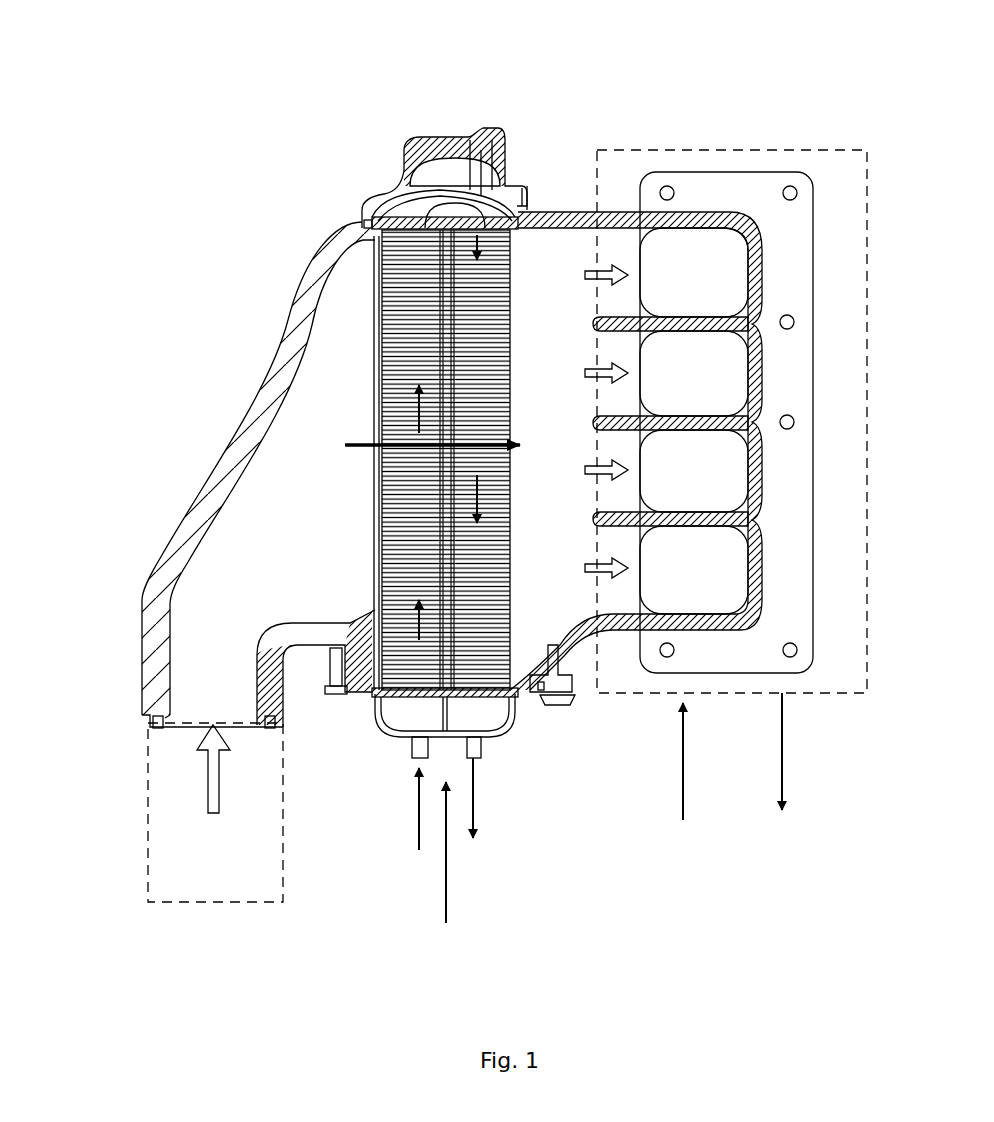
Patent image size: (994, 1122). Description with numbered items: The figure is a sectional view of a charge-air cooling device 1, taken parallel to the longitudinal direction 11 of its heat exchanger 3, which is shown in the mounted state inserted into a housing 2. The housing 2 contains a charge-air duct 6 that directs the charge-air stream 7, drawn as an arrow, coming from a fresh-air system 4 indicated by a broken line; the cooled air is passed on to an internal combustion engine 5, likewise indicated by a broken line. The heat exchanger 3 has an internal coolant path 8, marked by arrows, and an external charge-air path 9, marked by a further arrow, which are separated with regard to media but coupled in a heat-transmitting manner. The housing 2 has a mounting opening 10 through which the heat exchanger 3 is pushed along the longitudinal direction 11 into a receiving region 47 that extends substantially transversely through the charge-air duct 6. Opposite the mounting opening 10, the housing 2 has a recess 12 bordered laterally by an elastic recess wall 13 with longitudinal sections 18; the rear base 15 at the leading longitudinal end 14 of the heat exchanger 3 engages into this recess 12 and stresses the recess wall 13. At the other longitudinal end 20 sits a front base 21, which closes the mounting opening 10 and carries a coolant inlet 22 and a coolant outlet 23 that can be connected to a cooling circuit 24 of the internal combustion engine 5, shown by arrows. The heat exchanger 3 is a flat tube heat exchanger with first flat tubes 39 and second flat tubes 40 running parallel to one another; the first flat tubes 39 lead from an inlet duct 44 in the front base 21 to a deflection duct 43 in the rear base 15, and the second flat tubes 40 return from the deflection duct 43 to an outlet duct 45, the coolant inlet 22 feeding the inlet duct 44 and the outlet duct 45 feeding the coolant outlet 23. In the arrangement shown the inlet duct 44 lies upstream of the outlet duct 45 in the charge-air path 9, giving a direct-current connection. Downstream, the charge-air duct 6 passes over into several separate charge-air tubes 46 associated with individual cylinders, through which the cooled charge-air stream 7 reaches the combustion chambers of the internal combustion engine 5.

The charge-air cooling device 1 is at (216, 142).
The housing 2 is at (283, 318).
The heat exchanger 3 is at (378, 305).
The fresh-air system 4 is at (148, 805).
The internal combustion engine 5 is at (733, 150).
The charge-air duct 6 is at (240, 606).
The charge-air stream 7 is at (590, 278).
The internal coolant path 8 is at (482, 246).
The external charge-air path 9 is at (355, 445).
The mounting opening 10 is at (550, 700).
The longitudinal direction 11 is at (447, 888).
The recess 12 is at (493, 150).
The recess wall 13 is at (358, 210).
The leading longitudinal end 14 is at (376, 204).
The rear base 15 is at (384, 208).
The longitudinal sections 18 is at (528, 186).
The other longitudinal end 20 is at (490, 715).
The front base 21 is at (378, 700).
The coolant inlet 22 is at (412, 755).
The coolant outlet 23 is at (481, 755).
The cooling circuit 24 is at (683, 758).
The first flat tubes 39 is at (402, 215).
The second flat tubes 40 is at (457, 190).
The deflection duct 43 is at (432, 192).
The inlet duct 44 is at (405, 712).
The outlet duct 45 is at (485, 720).
The charge-air tubes 46 is at (640, 262).
The receiving region 47 is at (365, 508).